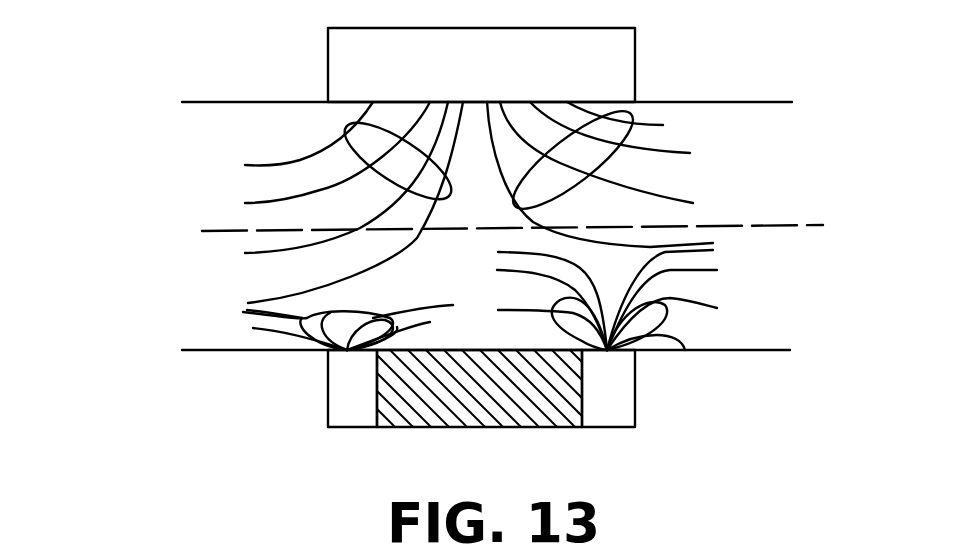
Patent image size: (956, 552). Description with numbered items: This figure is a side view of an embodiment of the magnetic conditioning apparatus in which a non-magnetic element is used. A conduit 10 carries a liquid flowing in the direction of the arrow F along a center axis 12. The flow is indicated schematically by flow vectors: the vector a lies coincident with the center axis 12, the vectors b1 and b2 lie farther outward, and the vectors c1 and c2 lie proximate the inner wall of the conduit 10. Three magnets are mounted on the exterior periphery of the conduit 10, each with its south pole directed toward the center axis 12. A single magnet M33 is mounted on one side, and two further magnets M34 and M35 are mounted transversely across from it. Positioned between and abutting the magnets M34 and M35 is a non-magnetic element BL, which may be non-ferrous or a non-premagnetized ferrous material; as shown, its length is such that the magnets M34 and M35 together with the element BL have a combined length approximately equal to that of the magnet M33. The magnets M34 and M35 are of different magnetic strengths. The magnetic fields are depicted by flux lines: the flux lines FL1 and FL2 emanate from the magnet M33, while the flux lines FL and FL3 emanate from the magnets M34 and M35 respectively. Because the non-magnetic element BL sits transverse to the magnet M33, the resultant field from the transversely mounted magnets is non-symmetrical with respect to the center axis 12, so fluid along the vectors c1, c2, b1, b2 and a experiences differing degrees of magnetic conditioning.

The magnet M33 is at (637, 47).
The conduit 10 is at (745, 100).
The flux lines FL1 is at (348, 127).
The flux lines FL2 is at (633, 112).
The flow direction arrow F is at (760, 142).
The center axis 12 is at (763, 226).
The flow vector c1 is at (165, 117).
The flow vector b1 is at (165, 173).
The flow vector a is at (165, 231).
The flow vector b2 is at (165, 283).
The flow vector c2 is at (165, 342).
The flux lines FL is at (313, 337).
The flux lines FL3 is at (672, 328).
The magnet M34 is at (327, 395).
The magnet M35 is at (636, 398).
The non-magnetic element BL is at (487, 425).